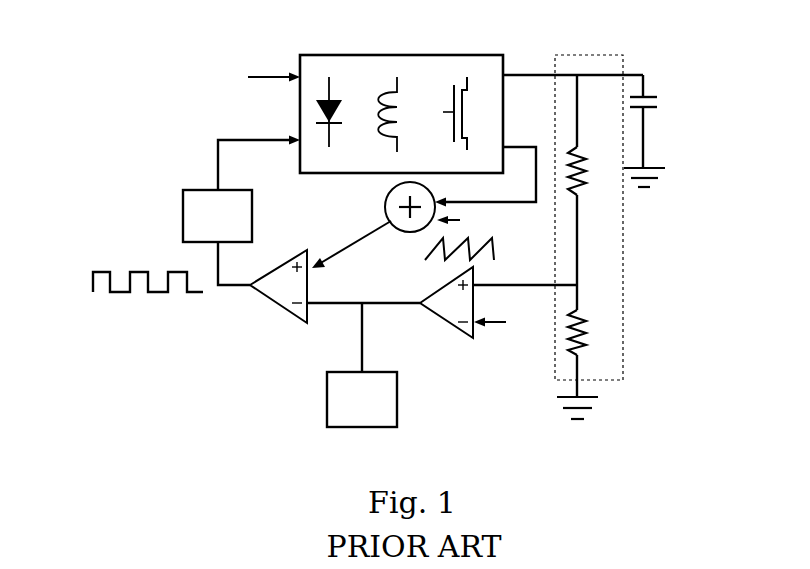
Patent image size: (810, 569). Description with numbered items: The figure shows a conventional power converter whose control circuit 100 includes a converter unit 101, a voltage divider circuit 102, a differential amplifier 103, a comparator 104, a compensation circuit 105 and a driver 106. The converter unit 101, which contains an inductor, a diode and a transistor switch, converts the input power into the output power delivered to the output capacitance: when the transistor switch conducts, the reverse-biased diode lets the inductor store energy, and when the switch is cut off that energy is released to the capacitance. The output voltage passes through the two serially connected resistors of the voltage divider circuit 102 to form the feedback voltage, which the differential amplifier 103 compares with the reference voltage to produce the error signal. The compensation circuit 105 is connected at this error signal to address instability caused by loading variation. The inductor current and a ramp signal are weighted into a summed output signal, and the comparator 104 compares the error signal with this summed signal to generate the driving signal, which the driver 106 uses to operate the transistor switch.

The control circuit 100 is at (78, 24).
The converter unit 101 is at (372, 54).
The voltage divider circuit 102 is at (585, 55).
The differential amplifier 103 is at (457, 327).
The comparator 104 is at (276, 300).
The compensation circuit 105 is at (380, 414).
The driver 106 is at (236, 229).